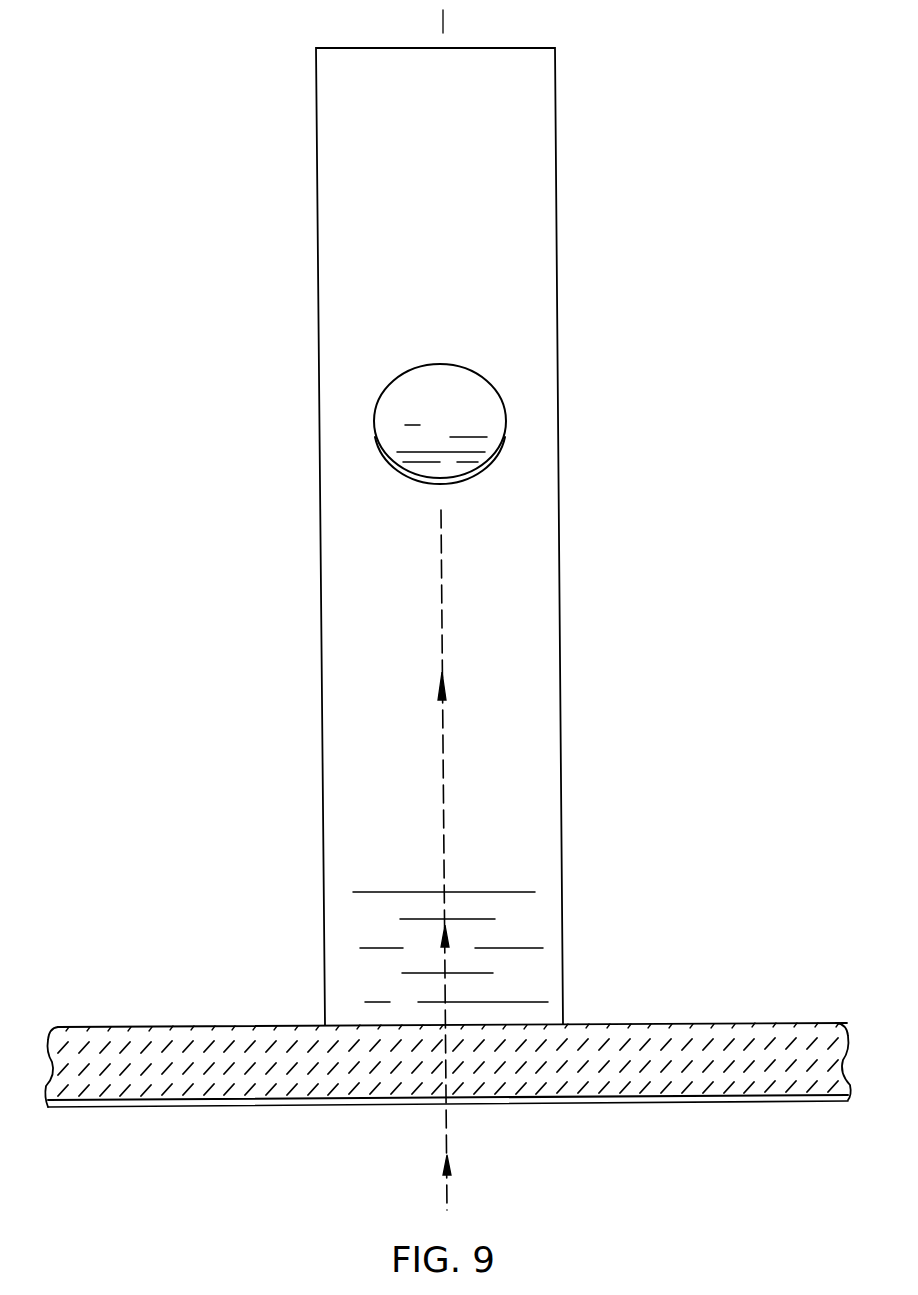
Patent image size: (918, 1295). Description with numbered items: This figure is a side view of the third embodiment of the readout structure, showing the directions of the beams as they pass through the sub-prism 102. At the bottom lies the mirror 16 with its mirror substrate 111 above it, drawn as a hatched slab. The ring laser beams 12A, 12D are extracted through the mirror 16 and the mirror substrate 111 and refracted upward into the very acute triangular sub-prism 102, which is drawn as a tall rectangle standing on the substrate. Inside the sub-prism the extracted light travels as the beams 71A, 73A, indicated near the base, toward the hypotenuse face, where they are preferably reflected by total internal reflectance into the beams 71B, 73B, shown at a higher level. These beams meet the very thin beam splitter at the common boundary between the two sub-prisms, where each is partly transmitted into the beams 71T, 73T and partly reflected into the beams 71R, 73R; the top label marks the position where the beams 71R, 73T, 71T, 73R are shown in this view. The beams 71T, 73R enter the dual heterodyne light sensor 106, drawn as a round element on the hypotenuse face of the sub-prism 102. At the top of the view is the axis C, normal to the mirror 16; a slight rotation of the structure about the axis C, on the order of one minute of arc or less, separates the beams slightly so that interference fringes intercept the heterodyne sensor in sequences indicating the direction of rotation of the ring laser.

The axis C is at (446, 21).
The triangular sub-prism 102 is at (513, 293).
The dual heterodyne light sensor 106 is at (407, 397).
The ring laser beam 12A is at (514, 863).
The light beam 12D is at (449, 1195).
The reflected beam 71R is at (611, 644).
The transmitted beam 73T is at (611, 644).
The transmitted beam 71T is at (611, 644).
The reflected beam 73R is at (442, 660).
The reflected beam 71B is at (525, 879).
The reflected beam 73B is at (445, 868).
The beam 71A is at (530, 975).
The beam 73A is at (447, 990).
The mirror substrate 111 is at (738, 1042).
The mirror 16 is at (760, 1102).